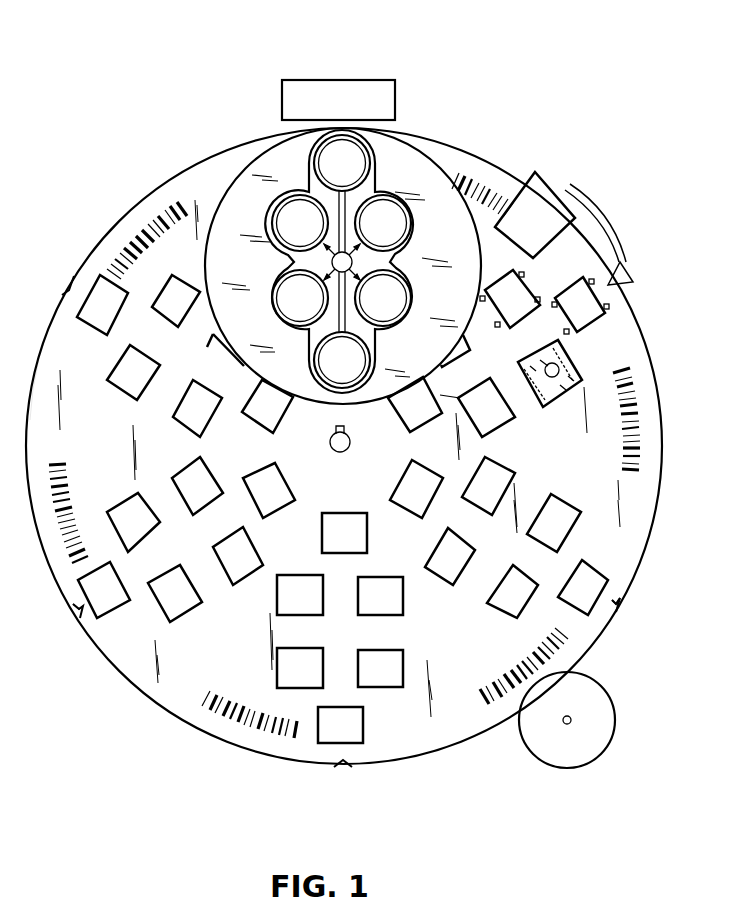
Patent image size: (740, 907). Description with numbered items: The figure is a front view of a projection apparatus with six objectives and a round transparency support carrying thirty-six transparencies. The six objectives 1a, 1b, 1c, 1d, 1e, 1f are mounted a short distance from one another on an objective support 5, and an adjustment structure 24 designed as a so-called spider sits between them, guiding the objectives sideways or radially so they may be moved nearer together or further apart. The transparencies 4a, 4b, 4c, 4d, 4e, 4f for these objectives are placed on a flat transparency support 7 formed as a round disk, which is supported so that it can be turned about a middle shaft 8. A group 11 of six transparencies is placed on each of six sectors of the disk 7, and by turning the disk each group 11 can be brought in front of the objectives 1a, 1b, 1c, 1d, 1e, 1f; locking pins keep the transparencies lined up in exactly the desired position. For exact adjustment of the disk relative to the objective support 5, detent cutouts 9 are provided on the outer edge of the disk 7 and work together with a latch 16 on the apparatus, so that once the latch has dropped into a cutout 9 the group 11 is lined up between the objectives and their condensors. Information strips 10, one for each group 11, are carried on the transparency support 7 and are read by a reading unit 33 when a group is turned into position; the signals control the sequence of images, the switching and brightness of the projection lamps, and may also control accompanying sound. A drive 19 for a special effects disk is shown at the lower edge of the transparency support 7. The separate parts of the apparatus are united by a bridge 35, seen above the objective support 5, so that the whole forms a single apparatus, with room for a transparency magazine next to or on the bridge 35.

The objective 1a is at (352, 174).
The objective 1b is at (310, 234).
The objective 1c is at (393, 234).
The objective 1d is at (310, 309).
The objective 1e is at (393, 309).
The objective 1f is at (352, 371).
The transparency 4a is at (112, 314).
The transparency 4b is at (143, 383).
The transparency 4c is at (184, 311).
The transparency 4d is at (208, 418).
The transparency 4e is at (218, 346).
The transparency 4f is at (277, 414).
The objective support 5 is at (275, 163).
The transparency support 7 is at (643, 508).
The middle shaft 8 is at (330, 448).
The detent cutout 9 is at (80, 615).
The information strip 10 is at (148, 217).
The group of transparencies 11 is at (78, 247).
The latch 16 is at (633, 268).
The drive for special effects disk 19 is at (588, 750).
The adjustment structure 24 is at (395, 150).
The reading unit 33 is at (525, 207).
The bridge 35 is at (348, 90).